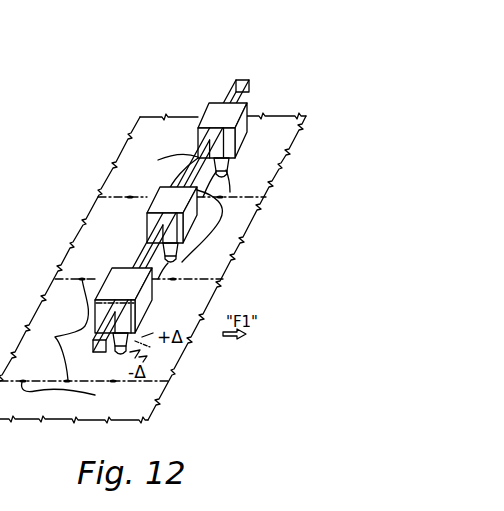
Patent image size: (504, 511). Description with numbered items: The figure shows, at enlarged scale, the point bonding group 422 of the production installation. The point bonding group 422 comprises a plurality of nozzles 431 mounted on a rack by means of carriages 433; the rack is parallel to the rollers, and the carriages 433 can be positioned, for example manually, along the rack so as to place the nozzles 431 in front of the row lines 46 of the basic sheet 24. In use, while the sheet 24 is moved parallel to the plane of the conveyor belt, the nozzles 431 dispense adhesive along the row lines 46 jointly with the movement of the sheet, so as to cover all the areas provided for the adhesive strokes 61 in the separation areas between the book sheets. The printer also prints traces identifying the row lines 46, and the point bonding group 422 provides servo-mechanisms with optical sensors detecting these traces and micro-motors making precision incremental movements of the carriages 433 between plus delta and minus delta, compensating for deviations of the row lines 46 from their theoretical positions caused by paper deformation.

The basic sheet 24 is at (280, 168).
The row lines 46 is at (92, 324).
The adhesive strokes 61 is at (69, 394).
The point bonding group 422 is at (200, 94).
The nozzles 431 is at (216, 222).
The carriages 433 is at (158, 160).